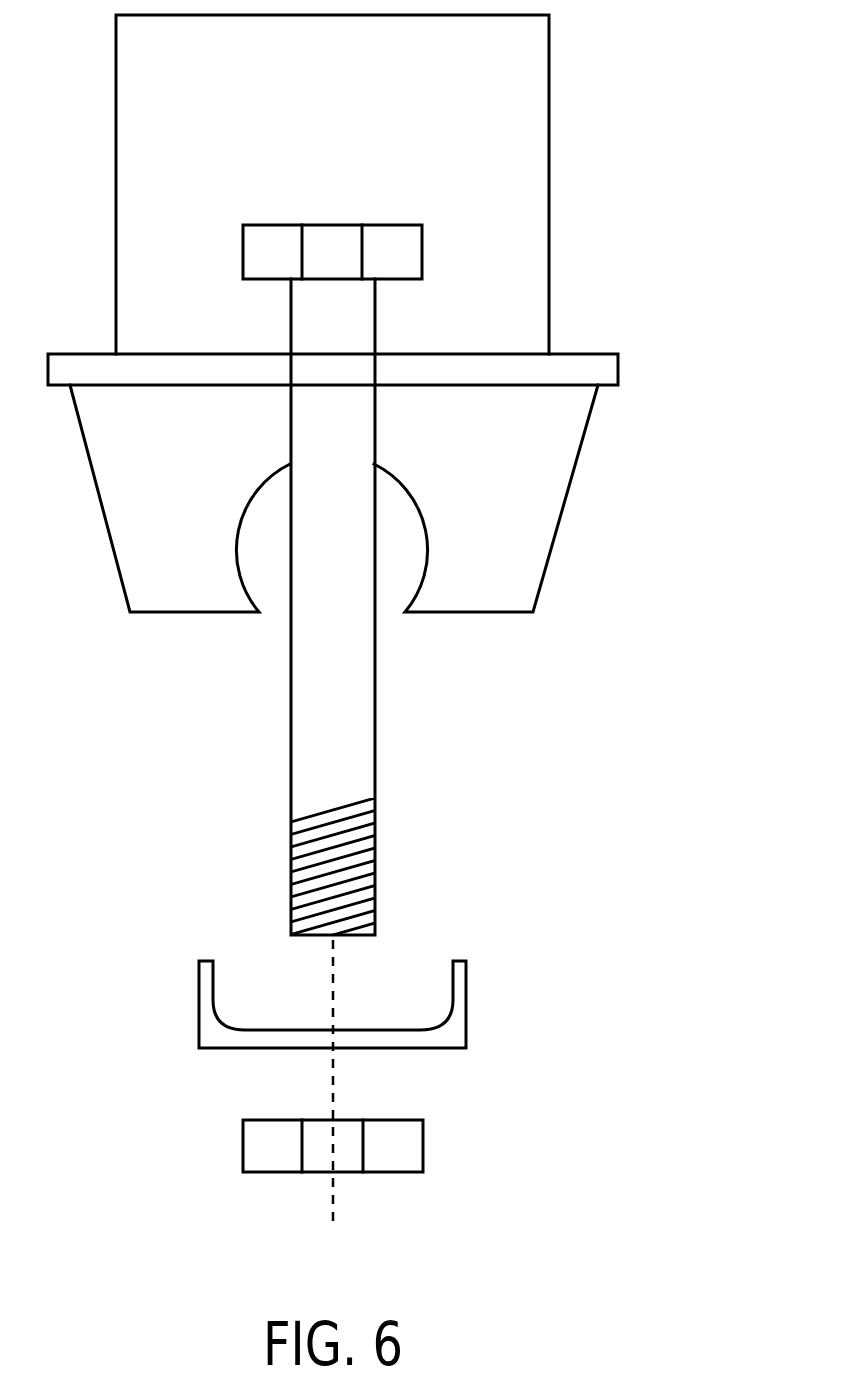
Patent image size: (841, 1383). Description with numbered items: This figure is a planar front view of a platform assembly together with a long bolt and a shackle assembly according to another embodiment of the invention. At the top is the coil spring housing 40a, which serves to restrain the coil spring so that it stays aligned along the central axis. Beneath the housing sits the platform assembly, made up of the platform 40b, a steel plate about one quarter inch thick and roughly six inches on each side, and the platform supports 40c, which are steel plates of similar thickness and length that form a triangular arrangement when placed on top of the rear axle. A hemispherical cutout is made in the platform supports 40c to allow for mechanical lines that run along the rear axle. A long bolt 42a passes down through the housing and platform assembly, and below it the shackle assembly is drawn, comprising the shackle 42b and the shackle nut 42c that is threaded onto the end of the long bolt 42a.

The coil spring housing 40a is at (549, 178).
The platform 40b is at (618, 370).
The platform supports 40c is at (565, 512).
The long bolt 42a is at (375, 755).
The shackle 42b is at (466, 1018).
The shackle nut 42c is at (423, 1144).